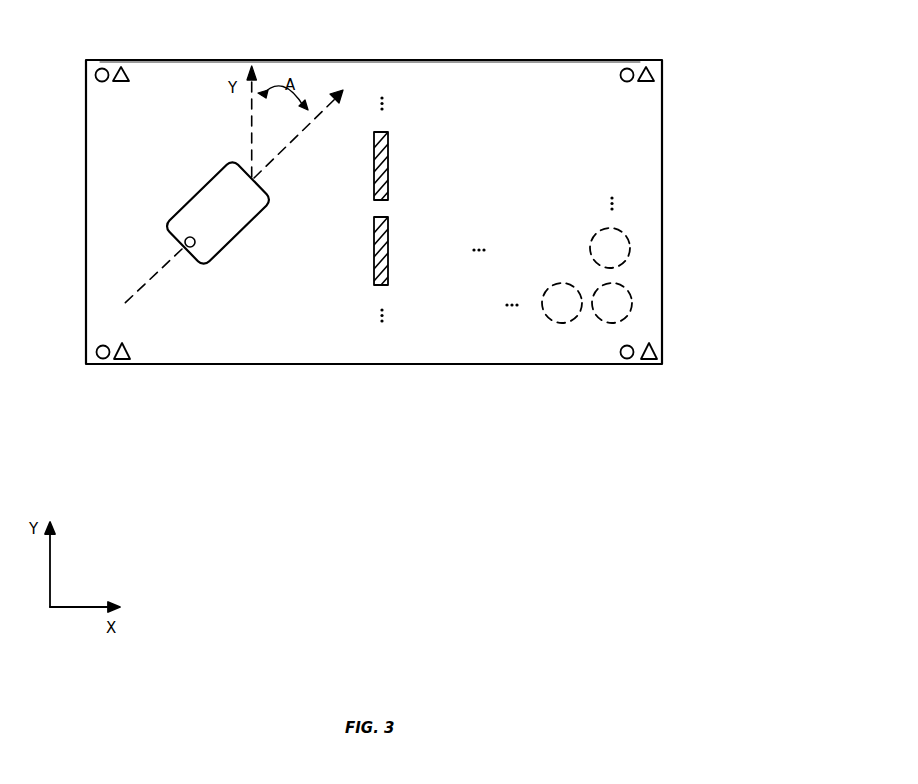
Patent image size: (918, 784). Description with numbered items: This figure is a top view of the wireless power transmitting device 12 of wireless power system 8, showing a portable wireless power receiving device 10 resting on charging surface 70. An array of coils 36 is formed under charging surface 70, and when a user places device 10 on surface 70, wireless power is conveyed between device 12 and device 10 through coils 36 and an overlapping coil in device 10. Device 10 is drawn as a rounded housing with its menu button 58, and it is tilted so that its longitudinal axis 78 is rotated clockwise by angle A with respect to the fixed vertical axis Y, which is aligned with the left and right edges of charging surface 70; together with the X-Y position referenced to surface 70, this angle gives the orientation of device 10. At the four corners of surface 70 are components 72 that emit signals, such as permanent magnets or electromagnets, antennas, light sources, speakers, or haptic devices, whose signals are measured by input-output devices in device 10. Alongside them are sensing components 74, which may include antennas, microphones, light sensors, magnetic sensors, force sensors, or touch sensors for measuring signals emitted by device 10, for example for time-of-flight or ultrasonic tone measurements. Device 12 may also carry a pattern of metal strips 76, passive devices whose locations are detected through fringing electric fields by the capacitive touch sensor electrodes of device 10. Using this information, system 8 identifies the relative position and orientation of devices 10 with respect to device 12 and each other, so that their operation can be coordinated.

The wireless power system 8 is at (757, 133).
The wireless power receiving device 10 is at (229, 232).
The wireless power transmitting device 12 is at (662, 194).
The coils 36 is at (630, 248).
The menu button 58 is at (186, 238).
The charging surface 70 is at (501, 73).
The components that emit signals 72 is at (95, 75).
The sensing components 74 is at (117, 67).
The metal strips 76 is at (388, 180).
The longitudinal axis 78 is at (277, 153).